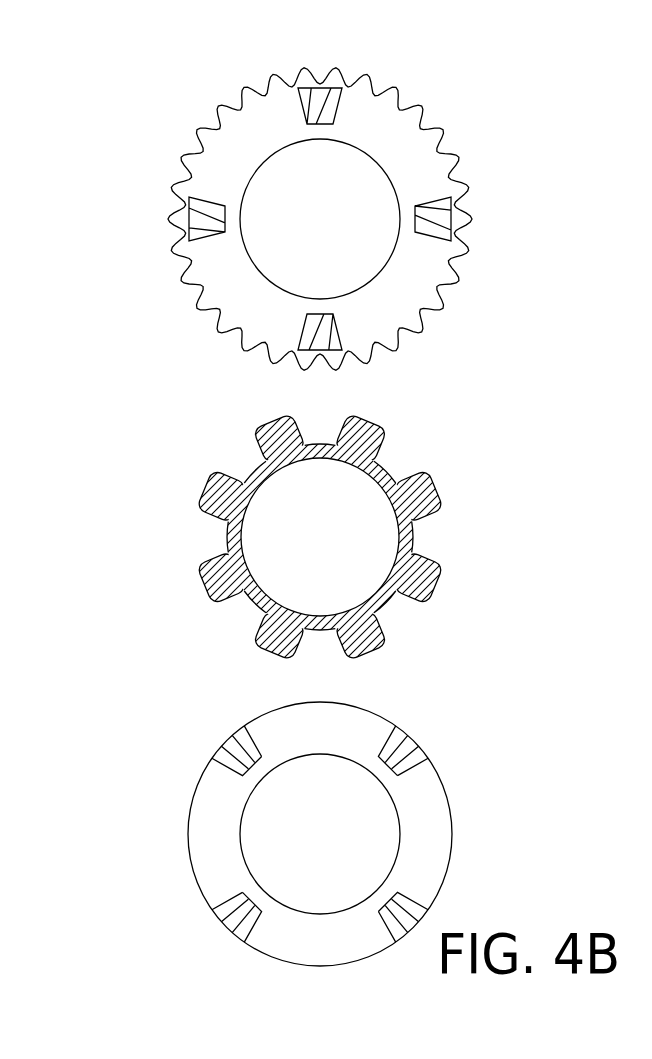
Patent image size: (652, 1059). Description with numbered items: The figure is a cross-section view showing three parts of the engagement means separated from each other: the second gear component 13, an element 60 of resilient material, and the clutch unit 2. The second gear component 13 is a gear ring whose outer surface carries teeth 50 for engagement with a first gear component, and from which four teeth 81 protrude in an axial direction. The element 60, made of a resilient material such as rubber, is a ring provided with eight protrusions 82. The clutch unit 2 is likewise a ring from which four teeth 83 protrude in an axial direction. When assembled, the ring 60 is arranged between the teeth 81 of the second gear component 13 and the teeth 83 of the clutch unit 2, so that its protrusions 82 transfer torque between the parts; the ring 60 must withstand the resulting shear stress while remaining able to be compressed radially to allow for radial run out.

The clutch unit 2 is at (332, 834).
The second gear component 13 is at (350, 219).
The teeth 50 is at (447, 160).
The element of resilient material 60 is at (300, 535).
The teeth of the second gear component 81 is at (322, 103).
The protrusions 82 is at (218, 497).
The teeth of the clutch unit 83 is at (240, 755).